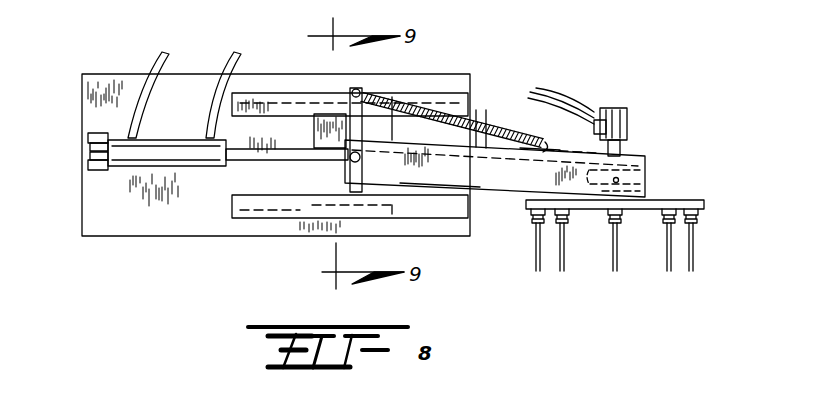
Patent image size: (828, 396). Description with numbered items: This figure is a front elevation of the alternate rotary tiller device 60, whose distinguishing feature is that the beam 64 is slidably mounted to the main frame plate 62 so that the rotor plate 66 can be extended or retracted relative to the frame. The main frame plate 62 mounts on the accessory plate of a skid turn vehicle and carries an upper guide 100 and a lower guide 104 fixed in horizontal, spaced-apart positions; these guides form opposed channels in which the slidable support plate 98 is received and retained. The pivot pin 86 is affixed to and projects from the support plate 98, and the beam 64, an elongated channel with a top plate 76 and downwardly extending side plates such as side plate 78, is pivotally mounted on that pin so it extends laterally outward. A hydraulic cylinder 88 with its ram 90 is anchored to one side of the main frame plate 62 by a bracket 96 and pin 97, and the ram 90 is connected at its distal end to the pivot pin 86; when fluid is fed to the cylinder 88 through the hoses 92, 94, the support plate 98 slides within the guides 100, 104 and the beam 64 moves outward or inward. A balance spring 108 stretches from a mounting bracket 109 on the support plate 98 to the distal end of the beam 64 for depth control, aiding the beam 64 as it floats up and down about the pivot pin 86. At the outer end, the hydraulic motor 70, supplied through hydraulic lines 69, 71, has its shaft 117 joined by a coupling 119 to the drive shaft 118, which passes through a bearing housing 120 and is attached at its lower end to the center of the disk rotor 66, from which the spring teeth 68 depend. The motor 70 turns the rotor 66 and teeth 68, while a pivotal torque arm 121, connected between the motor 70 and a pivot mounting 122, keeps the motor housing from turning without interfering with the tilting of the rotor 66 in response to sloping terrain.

The alternate embodiment of the rotary tiller device 60 is at (636, 90).
The main frame plate 62 is at (116, 74).
The beam 64 is at (484, 128).
The rotor plate 66 is at (702, 204).
The spring teeth 68 is at (690, 272).
The hydraulic line 69 is at (530, 96).
The hydraulic motor 70 is at (627, 114).
The hydraulic line 71 is at (566, 90).
The top plate 76 is at (428, 148).
The side plate 78 is at (488, 190).
The pivot pin 86 is at (352, 170).
The hydraulic cylinder 88 is at (140, 134).
The ram 90 is at (240, 166).
The hose 92 is at (138, 72).
The hose 94 is at (210, 72).
The bracket 96 is at (88, 168).
The pin 97 is at (88, 138).
The slidable support plate 98 is at (314, 124).
The upper guide 100 is at (256, 93).
The lower guide 104 is at (304, 196).
The balance spring 108 is at (398, 92).
The mounting bracket 109 is at (350, 93).
The shaft of the hydraulic motor 117 is at (618, 152).
The drive shaft 118 is at (646, 190).
The coupling 119 is at (650, 165).
The bearing housing 120 is at (648, 176).
The pivotal torque arm 121 is at (572, 168).
The pivot mounting 122 is at (582, 120).